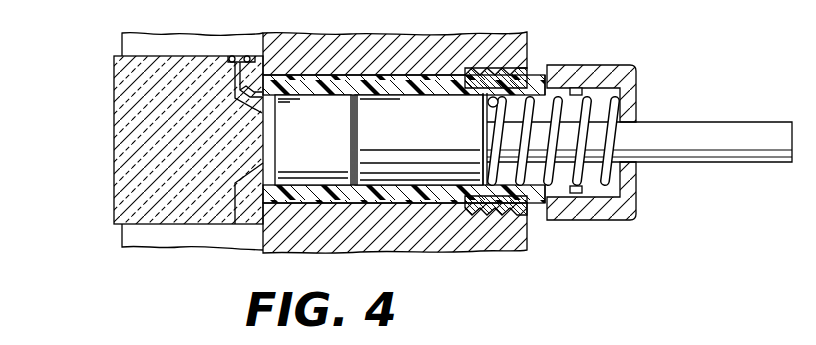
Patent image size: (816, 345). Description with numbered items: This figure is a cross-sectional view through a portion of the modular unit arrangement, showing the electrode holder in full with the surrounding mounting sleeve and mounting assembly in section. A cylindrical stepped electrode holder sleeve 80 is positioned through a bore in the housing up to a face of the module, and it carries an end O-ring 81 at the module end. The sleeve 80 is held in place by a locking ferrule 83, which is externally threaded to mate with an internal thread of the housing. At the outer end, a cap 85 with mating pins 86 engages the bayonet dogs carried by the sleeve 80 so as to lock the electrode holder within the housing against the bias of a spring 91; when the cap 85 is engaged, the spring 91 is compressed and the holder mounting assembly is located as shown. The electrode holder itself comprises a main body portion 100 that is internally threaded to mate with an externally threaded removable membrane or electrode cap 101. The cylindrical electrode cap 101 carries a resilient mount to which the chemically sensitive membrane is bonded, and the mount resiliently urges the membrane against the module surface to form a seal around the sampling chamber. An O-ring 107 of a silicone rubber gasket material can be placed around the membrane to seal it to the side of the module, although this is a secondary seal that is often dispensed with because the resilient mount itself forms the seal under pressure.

The electrode holder sleeve 80 is at (318, 83).
The end O-ring 81 is at (265, 197).
The locking ferrule 83 is at (512, 205).
The cap 85 is at (606, 212).
The mating pins 86 is at (575, 88).
The spring 91 is at (614, 102).
The main body portion 100 is at (420, 139).
The electrode cap 101 is at (313, 140).
The O-ring 107 is at (243, 88).